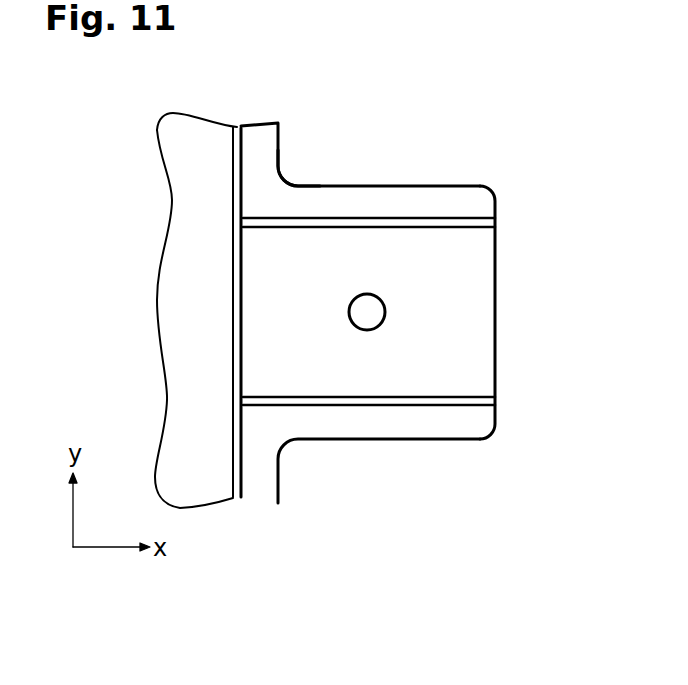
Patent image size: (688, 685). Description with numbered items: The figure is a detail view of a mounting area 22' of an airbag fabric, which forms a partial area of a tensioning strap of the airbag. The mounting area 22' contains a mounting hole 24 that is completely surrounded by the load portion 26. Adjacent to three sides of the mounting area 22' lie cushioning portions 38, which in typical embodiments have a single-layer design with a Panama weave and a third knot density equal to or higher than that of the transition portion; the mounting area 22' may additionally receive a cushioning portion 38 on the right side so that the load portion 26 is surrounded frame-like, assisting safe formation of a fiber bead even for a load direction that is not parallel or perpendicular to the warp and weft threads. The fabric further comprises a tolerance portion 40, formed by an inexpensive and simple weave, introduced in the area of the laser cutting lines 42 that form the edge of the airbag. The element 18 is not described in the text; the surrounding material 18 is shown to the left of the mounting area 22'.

The body / component 18 is at (212, 488).
The mounting area 22' is at (397, 284).
The mounting hole 24 is at (367, 312).
The load portion 26 is at (480, 253).
The cushioning portion 38 is at (237, 127).
The tolerance portion 40 is at (375, 198).
The cutting lines 42 is at (325, 183).